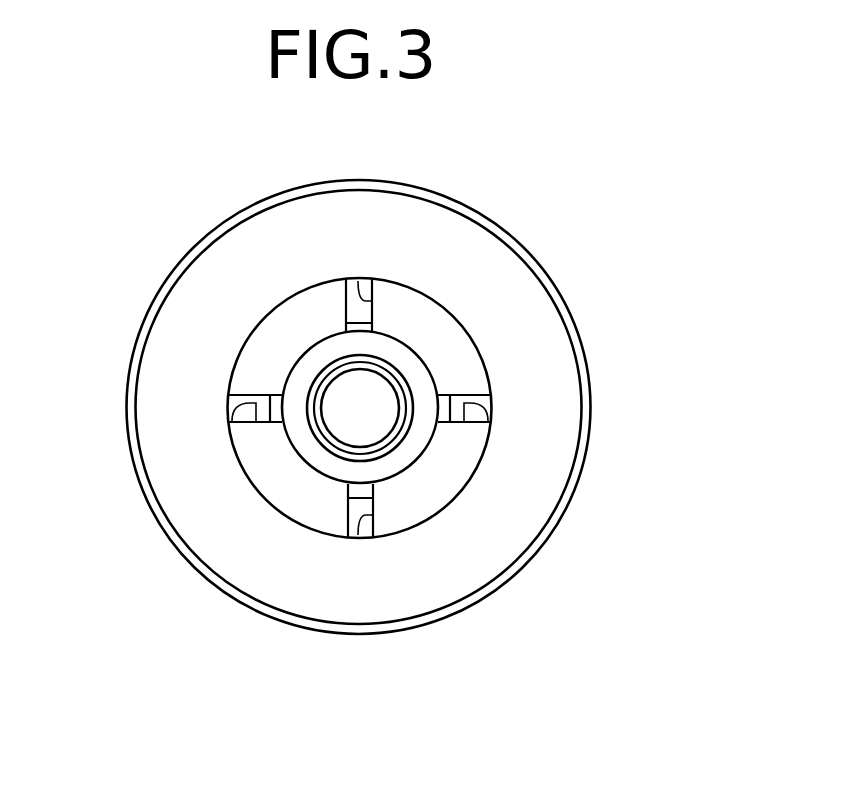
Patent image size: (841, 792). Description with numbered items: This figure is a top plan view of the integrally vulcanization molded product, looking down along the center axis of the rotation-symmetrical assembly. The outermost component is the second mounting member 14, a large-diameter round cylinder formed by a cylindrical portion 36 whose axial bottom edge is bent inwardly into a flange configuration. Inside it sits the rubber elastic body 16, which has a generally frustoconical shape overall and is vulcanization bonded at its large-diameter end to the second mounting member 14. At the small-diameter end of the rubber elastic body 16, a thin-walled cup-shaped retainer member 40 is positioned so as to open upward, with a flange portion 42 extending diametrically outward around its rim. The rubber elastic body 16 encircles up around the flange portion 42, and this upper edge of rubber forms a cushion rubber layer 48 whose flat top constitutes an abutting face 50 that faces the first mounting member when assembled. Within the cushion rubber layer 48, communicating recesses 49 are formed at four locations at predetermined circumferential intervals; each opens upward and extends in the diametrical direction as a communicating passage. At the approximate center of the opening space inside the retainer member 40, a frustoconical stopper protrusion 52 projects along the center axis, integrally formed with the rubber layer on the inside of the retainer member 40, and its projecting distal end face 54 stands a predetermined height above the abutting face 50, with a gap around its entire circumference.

The rubber elastic body 16 is at (490, 272).
The cylindrical portion 36 is at (422, 407).
The second mounting member 14 is at (584, 370).
The flange portion 42 is at (310, 321).
The retainer member 40 is at (355, 300).
The abutting face 50 is at (266, 408).
The cushion rubber layer 48 is at (260, 368).
The projecting distal end face 54 is at (492, 375).
The stopper protrusion 52 is at (378, 405).
The communicating recesses 49 is at (360, 300).